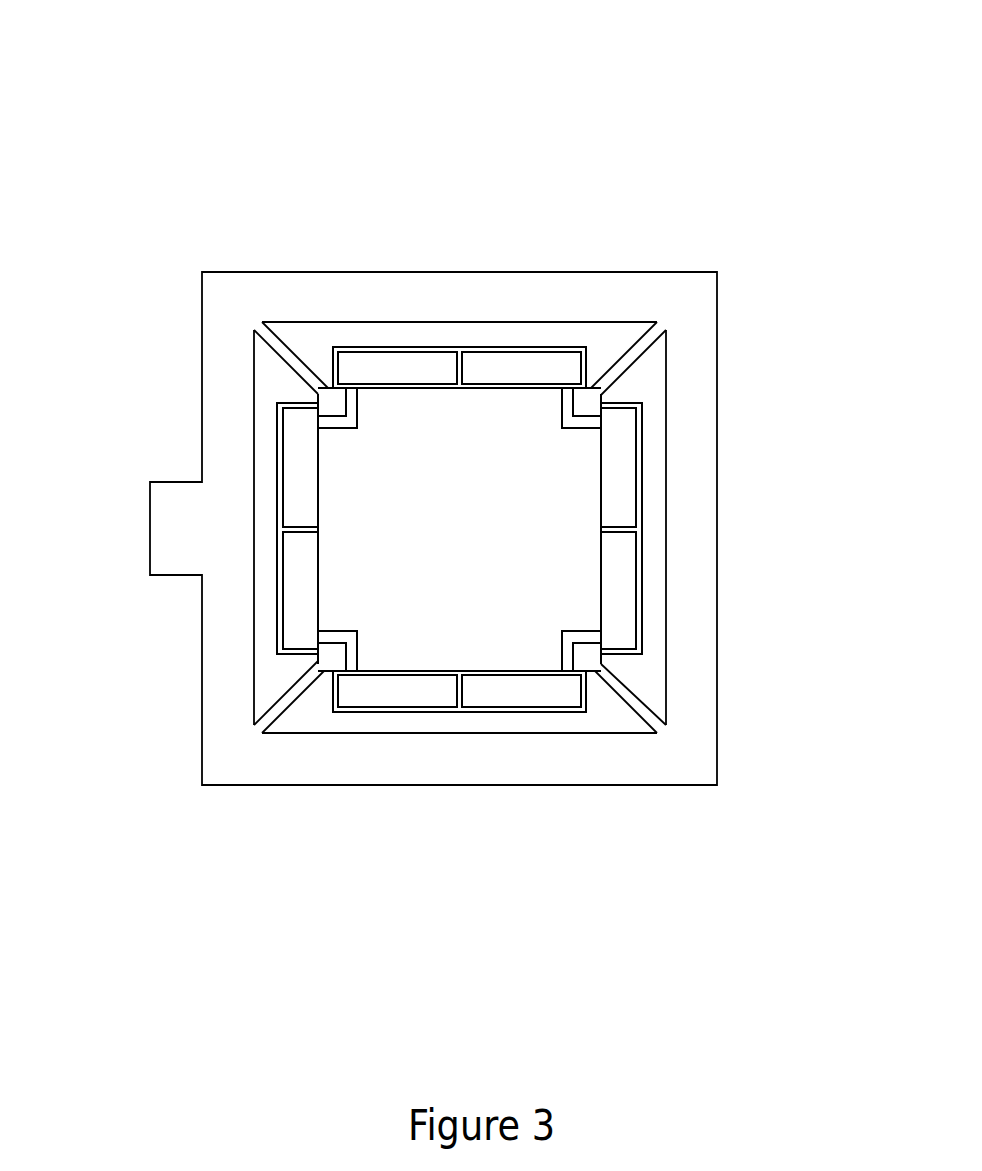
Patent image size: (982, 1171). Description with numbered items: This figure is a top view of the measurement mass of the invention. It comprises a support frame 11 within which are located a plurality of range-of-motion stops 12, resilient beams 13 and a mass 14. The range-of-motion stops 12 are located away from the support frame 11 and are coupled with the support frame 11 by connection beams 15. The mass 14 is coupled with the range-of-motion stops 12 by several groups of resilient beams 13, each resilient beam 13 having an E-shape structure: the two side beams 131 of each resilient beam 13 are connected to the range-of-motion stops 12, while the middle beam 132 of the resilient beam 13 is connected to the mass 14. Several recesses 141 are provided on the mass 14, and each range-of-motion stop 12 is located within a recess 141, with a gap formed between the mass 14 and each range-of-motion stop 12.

The support frame 11 is at (350, 755).
The range-of-motion stop 12 is at (601, 664).
The resilient beam 13 is at (428, 529).
The side beam 131 is at (293, 410).
The middle beam 132 is at (293, 530).
The mass 14 is at (459, 346).
The recess 141 is at (350, 400).
The connection beam 15 is at (633, 705).